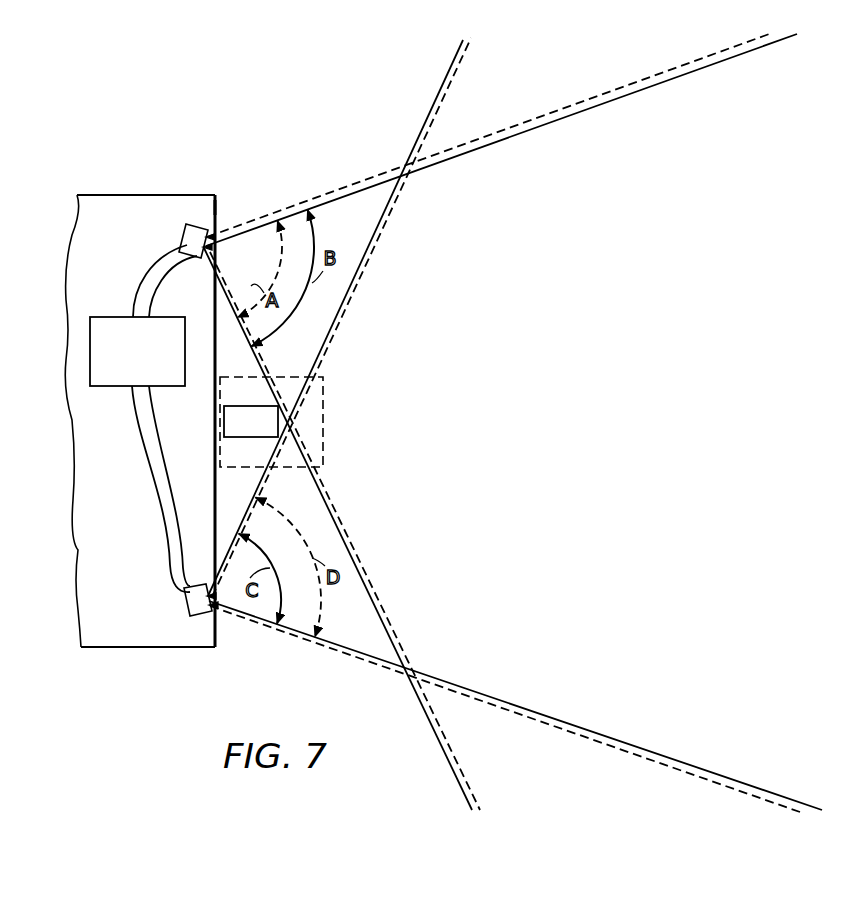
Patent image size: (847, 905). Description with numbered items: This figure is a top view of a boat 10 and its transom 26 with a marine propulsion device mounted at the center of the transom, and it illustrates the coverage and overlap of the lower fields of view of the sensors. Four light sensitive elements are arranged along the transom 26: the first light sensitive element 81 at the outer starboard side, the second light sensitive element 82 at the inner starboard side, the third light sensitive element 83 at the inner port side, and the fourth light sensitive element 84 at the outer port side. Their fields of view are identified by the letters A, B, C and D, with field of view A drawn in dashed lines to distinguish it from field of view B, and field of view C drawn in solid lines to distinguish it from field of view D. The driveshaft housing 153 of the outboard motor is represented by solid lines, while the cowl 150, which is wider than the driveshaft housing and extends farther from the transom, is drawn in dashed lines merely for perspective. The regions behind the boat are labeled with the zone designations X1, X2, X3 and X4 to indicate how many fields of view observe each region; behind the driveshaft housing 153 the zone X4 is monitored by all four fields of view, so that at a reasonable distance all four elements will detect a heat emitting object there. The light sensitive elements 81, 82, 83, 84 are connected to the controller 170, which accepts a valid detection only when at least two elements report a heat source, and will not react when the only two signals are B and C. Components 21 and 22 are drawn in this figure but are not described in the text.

The boat 10 is at (170, 205).
The first sensor 21 is at (185, 237).
The second sensor 22 is at (193, 585).
The transom 26 is at (216, 207).
The first light sensitive element 81 is at (197, 226).
The second light sensitive element 82 is at (202, 258).
The third light sensitive element 83 is at (184, 605).
The fourth light sensitive element 84 is at (201, 612).
The cowl 150 is at (237, 468).
The driveshaft housing 153 is at (231, 436).
The controller 170 is at (165, 396).
The zone X1 is at (430, 113).
The zone X2 is at (472, 77).
The zone X3 is at (555, 120).
The zone X4 is at (418, 425).